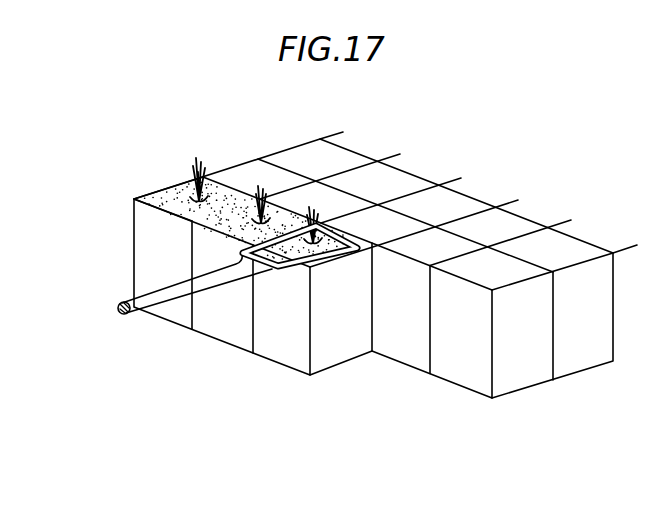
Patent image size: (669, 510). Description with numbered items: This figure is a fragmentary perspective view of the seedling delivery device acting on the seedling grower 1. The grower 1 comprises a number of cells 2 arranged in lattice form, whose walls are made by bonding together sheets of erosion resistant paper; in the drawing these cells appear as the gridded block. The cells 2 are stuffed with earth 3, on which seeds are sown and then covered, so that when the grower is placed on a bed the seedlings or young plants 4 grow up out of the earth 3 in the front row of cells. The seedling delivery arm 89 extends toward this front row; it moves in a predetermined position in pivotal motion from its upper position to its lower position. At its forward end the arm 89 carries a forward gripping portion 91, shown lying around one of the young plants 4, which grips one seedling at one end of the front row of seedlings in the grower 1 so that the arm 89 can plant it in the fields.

The seedling grower 1 is at (603, 295).
The cells 2 is at (163, 209).
The earth 3 is at (133, 205).
The young plants 4 is at (196, 186).
The seedling delivery arm 89 is at (150, 312).
The forward gripping portion 91 is at (328, 258).